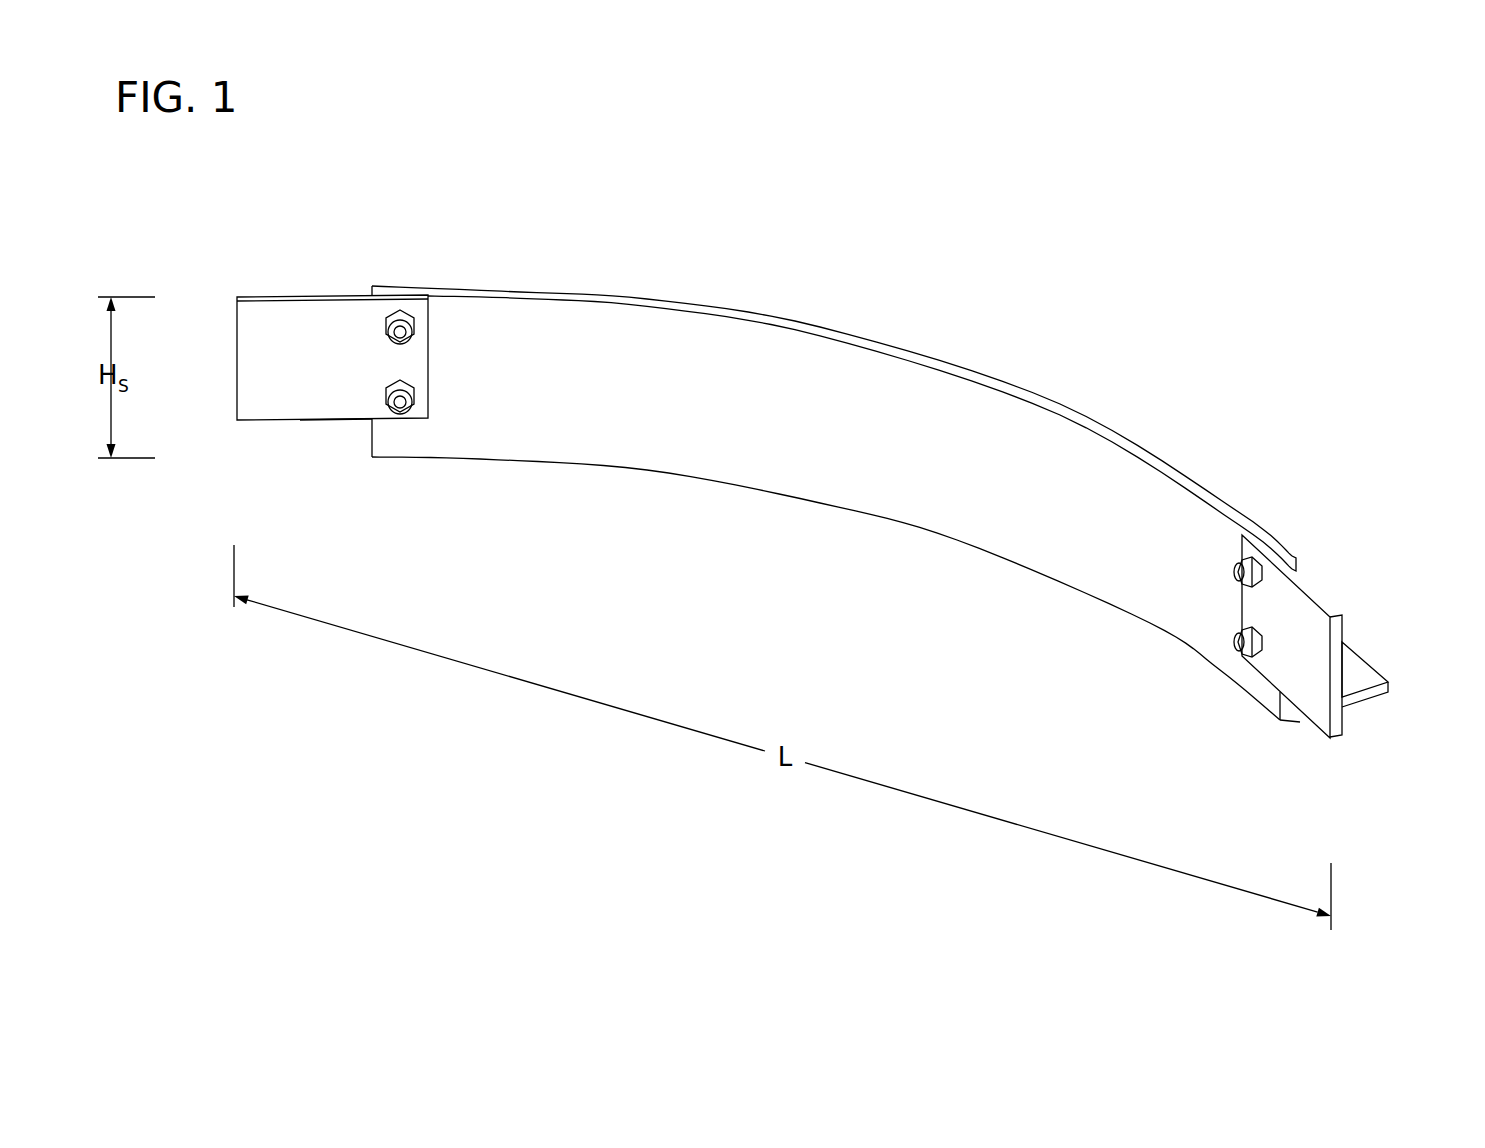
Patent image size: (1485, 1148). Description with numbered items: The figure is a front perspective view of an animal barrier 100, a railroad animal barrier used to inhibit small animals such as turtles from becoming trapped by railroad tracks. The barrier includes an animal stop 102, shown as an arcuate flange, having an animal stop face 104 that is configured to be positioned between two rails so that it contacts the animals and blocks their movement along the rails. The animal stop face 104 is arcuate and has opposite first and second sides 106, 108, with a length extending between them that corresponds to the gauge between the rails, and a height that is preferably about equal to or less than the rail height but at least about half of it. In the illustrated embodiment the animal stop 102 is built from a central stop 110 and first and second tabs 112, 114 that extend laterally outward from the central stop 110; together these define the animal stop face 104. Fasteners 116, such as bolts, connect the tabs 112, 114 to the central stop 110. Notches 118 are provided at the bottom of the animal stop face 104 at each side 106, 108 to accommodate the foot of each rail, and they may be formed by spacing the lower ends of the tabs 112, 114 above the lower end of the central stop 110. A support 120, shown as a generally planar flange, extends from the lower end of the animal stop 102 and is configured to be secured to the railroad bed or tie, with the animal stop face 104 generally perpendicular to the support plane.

The animal barrier 100 is at (1160, 276).
The animal stop 102 is at (852, 330).
The animal stop face 104 is at (817, 436).
The first side 106 is at (237, 367).
The second side 108 is at (1336, 662).
The central stop 110 is at (1060, 403).
The first tab 112 is at (315, 318).
The second tab 114 is at (1309, 618).
The fasteners 116 is at (410, 312).
The notches 118 is at (326, 441).
The support 120 is at (1400, 691).